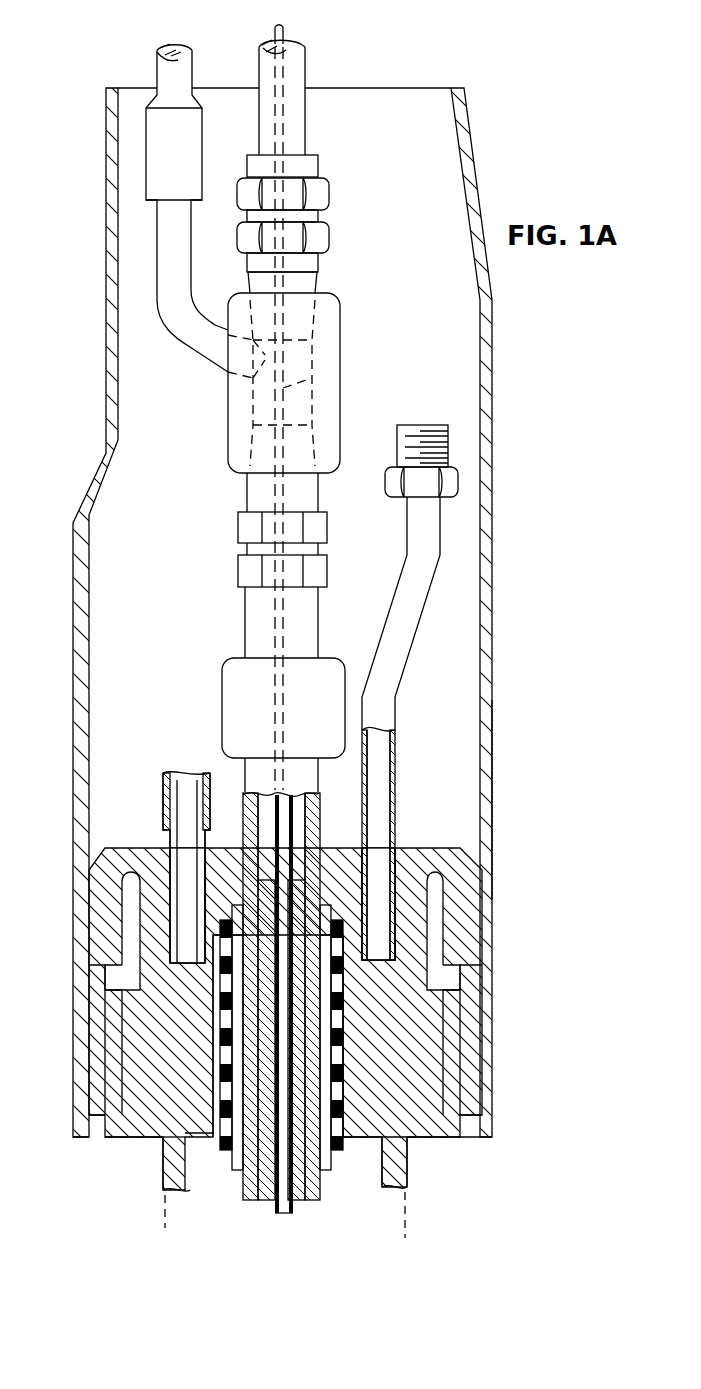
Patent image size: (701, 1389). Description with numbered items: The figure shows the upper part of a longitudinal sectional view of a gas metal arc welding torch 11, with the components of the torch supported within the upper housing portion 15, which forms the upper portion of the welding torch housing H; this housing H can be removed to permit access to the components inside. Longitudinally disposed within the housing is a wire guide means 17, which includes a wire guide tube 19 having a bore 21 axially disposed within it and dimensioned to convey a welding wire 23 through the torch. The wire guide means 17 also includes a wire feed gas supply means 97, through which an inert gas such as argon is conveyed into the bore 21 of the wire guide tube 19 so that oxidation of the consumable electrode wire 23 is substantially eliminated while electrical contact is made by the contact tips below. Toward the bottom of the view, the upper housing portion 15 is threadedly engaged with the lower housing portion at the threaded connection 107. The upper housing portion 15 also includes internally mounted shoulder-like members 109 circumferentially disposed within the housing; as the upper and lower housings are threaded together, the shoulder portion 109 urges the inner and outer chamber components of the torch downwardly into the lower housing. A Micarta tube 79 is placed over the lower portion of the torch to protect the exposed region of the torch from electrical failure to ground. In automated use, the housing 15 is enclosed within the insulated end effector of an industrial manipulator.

The advanced GMAW torch 11 is at (502, 168).
The upper housing portion 15 is at (493, 785).
The wire guide means 17 is at (257, 773).
The wire guide tube 19 is at (305, 1200).
The bore 21 is at (312, 377).
The welding wire 23 is at (284, 38).
The Micarta tube 79 is at (400, 1168).
The wire feed gas supply means 97 is at (165, 278).
The threaded engagement 107 is at (450, 1097).
The shoulder-like members 109 is at (473, 902).
The welding torch housing H is at (493, 517).